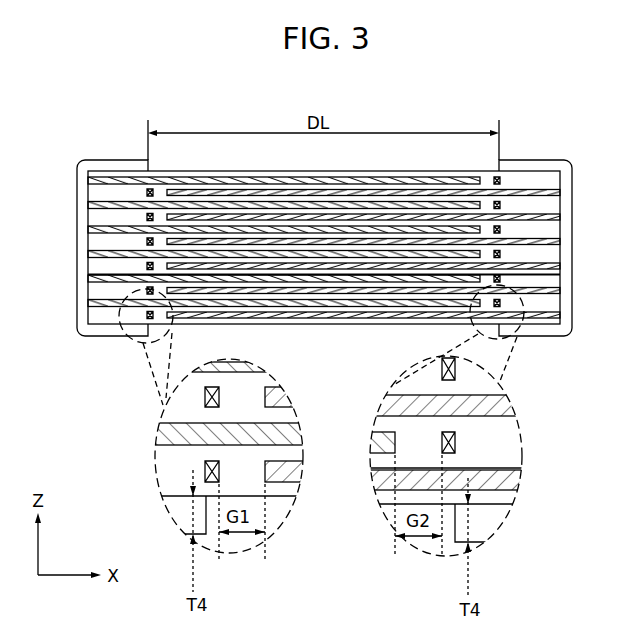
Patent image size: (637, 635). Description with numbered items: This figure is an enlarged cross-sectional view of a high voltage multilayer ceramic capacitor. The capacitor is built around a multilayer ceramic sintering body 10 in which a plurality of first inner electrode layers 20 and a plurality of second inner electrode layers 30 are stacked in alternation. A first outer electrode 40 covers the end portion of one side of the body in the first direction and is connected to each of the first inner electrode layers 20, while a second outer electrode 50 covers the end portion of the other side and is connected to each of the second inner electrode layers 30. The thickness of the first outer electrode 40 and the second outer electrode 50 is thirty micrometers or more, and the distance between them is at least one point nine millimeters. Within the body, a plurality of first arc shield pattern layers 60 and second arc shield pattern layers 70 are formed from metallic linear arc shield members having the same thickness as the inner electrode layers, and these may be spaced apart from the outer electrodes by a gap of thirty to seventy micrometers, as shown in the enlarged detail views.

The multilayer ceramic sintering body 10 is at (102, 268).
The first inner electrode layers 20 is at (88, 181).
The second inner electrode layers 30 is at (557, 192).
The first outer electrode 40 is at (113, 163).
The second outer electrode 50 is at (520, 166).
The first arc shield pattern layers 60 is at (500, 180).
The second arc shield pattern layers 70 is at (147, 192).